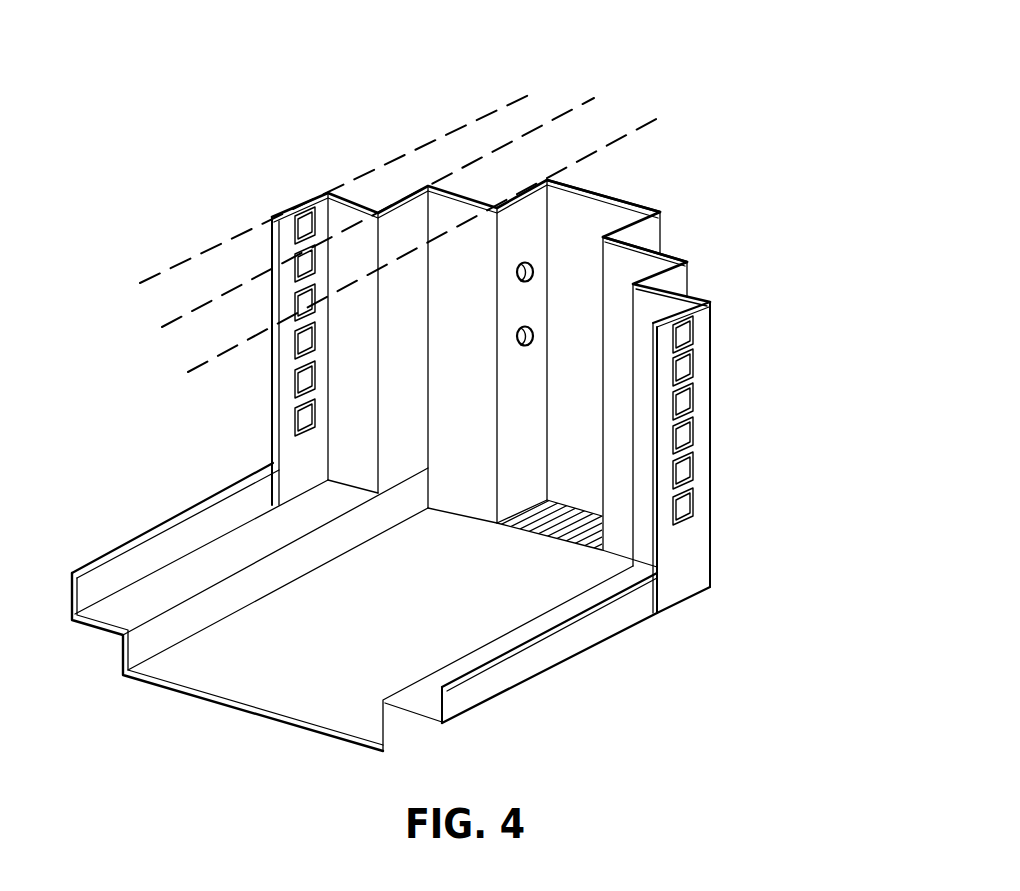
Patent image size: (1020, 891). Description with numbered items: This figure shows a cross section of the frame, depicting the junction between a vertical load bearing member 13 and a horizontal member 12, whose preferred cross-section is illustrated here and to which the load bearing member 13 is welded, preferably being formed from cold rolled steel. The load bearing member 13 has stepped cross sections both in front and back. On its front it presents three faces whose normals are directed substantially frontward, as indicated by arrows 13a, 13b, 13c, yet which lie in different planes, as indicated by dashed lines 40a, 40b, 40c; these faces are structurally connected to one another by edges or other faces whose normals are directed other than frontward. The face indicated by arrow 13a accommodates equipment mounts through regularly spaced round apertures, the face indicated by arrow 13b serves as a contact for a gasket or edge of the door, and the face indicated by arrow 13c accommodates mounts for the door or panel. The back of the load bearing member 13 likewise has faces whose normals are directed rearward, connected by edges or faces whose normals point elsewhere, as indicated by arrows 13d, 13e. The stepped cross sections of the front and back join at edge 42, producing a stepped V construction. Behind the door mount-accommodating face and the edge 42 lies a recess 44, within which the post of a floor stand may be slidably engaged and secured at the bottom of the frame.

The horizontal member 12 is at (246, 697).
The load bearing member 13 is at (535, 343).
The arrow denoting normal of equipment mount-accommodating face 13a is at (316, 197).
The arrow denoting normal of gasket-contacting face 13b is at (430, 192).
The arrow denoting normal of door mount-accommodating face 13c is at (541, 182).
The arrow denoting normal of rear face 13d is at (667, 245).
The arrow denoting normal of rear face 13e is at (693, 290).
The dashed line 40a is at (493, 115).
The dashed line 40b is at (581, 108).
The dashed line 40c is at (660, 118).
The edge 42 is at (626, 187).
The recess 44 is at (578, 496).